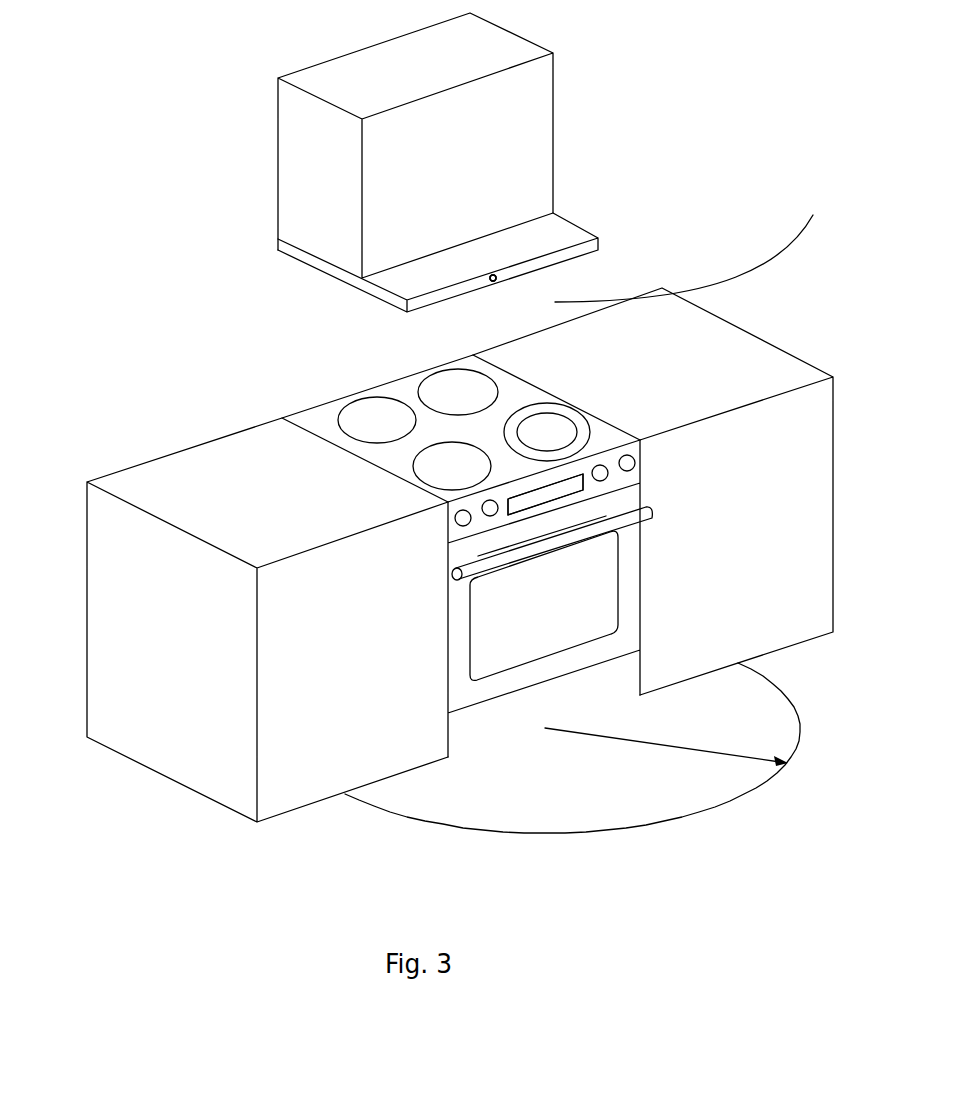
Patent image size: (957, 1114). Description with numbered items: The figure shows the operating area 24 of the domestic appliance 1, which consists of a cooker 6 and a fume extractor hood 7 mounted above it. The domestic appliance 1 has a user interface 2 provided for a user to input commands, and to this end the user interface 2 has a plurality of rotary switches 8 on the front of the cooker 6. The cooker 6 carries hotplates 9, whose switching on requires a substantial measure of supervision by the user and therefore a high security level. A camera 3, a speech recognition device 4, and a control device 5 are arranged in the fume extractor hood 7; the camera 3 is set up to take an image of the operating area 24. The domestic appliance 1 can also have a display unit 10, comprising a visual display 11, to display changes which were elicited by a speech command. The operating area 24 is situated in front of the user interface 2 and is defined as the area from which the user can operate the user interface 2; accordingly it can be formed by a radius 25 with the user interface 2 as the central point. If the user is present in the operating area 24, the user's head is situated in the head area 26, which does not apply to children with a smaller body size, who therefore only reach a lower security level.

The domestic appliance 1 is at (165, 353).
The user interface 2 is at (480, 523).
The camera 3 is at (491, 280).
The speech recognition device 4 is at (496, 278).
The control device 5 is at (493, 278).
The cooker 6 is at (392, 382).
The fume extractor hood 7 is at (438, 162).
The rotary switches 8 is at (636, 463).
The hotplates 9 is at (358, 415).
The display unit 10 is at (565, 487).
The visual display 11 is at (545, 494).
The operating area 24 is at (797, 711).
The radius 25 is at (628, 742).
The head area 26 is at (764, 269).